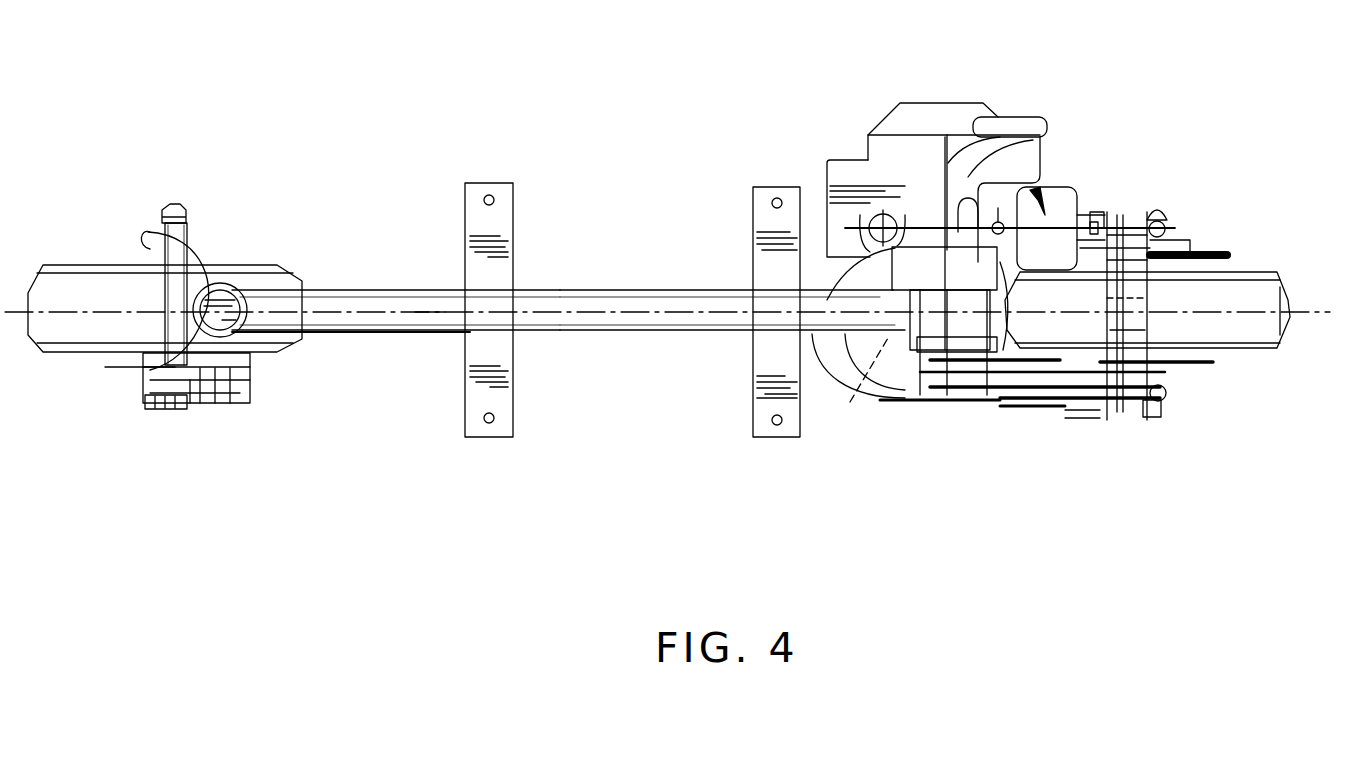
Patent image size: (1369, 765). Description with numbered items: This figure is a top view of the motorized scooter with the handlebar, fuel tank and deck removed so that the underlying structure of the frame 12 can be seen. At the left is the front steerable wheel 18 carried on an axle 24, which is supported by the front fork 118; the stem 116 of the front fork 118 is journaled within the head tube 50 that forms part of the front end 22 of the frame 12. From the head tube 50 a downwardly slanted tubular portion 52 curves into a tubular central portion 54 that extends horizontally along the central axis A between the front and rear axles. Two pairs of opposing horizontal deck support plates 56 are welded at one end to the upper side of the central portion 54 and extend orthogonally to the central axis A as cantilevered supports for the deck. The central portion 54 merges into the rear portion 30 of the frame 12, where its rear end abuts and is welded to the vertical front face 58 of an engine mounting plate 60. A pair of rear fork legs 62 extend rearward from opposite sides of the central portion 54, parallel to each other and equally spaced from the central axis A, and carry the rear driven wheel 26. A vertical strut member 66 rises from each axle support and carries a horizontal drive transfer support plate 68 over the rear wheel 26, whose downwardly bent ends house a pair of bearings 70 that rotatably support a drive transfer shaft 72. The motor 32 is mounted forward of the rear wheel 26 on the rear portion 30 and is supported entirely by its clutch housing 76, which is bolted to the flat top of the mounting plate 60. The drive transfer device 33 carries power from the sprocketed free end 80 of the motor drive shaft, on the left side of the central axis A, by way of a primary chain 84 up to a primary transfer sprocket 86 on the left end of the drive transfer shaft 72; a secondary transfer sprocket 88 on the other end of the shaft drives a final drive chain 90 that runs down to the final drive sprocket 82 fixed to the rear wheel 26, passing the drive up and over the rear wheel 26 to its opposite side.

The frame 12 is at (648, 337).
The front steerable wheel 18 is at (97, 270).
The front end 22 is at (323, 341).
The axle 24 is at (174, 205).
The rear driven wheel 26 is at (1262, 287).
The rear portion 30 is at (888, 404).
The motor 32 is at (1027, 110).
The drive transfer device 33 is at (1095, 416).
The head tube 50 is at (185, 320).
The downwardly slanted tubular portion 52 is at (318, 290).
The central portion 54 is at (630, 290).
The horizontal deck support plates 56 is at (502, 230).
The vertical front face 58 is at (853, 382).
The engine mounting plate 60 is at (1030, 408).
The rear fork legs 62 is at (823, 280).
The vertical strut member 66 is at (1160, 222).
The horizontal drive transfer support plate 68 is at (1148, 330).
The bearings 70 is at (1120, 215).
The drive transfer shaft 72 is at (1150, 298).
The clutch housing 76 is at (985, 400).
The sprocketed free end 80 is at (952, 400).
The final drive sprocket 82 is at (1215, 250).
The primary chain 84 is at (1068, 400).
The primary transfer sprocket 86 is at (1213, 363).
The secondary transfer sprocket 88 is at (1097, 225).
The final drive chain 90 is at (1185, 245).
The stem 116 is at (237, 323).
The front fork 118 is at (193, 252).
The central axis A is at (425, 312).